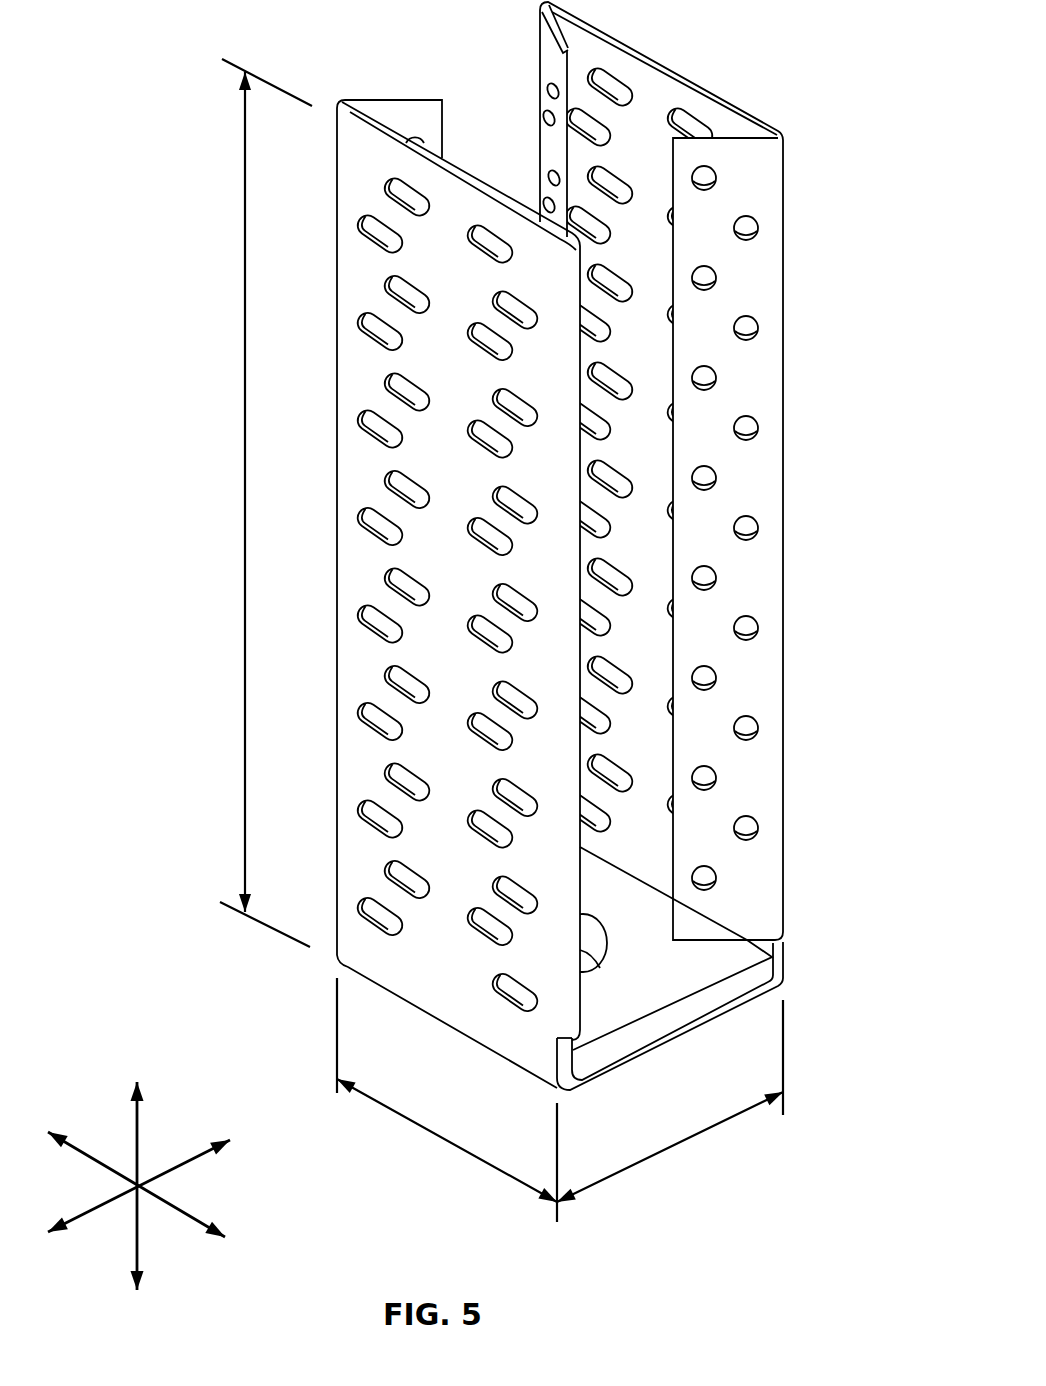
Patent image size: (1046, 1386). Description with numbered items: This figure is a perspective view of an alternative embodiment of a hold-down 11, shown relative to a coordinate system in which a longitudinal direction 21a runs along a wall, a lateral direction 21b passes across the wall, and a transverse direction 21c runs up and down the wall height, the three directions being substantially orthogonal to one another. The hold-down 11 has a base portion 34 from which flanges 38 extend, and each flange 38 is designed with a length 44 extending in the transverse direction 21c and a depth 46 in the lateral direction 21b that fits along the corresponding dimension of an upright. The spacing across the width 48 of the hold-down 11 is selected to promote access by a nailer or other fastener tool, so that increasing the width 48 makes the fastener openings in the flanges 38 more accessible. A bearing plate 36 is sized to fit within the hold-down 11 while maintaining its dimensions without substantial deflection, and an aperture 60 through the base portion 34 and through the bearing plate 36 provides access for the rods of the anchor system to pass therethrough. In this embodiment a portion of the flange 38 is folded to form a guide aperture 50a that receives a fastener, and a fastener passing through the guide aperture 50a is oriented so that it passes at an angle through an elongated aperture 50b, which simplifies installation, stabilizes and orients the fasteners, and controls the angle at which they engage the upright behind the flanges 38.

The hold-down 11 is at (828, 66).
The base portion 34 is at (642, 1053).
The bearing plate 36 is at (707, 1003).
The flange 38 is at (466, 285).
The length 44 is at (245, 490).
The depth 46 is at (446, 1143).
The width 48 is at (692, 1148).
The guide aperture 50a is at (715, 683).
The elongated aperture 50b is at (367, 619).
The aperture 60 is at (616, 940).
The longitudinal direction 21a is at (203, 1153).
The lateral direction 21b is at (189, 1222).
The transverse direction 21c is at (140, 1132).